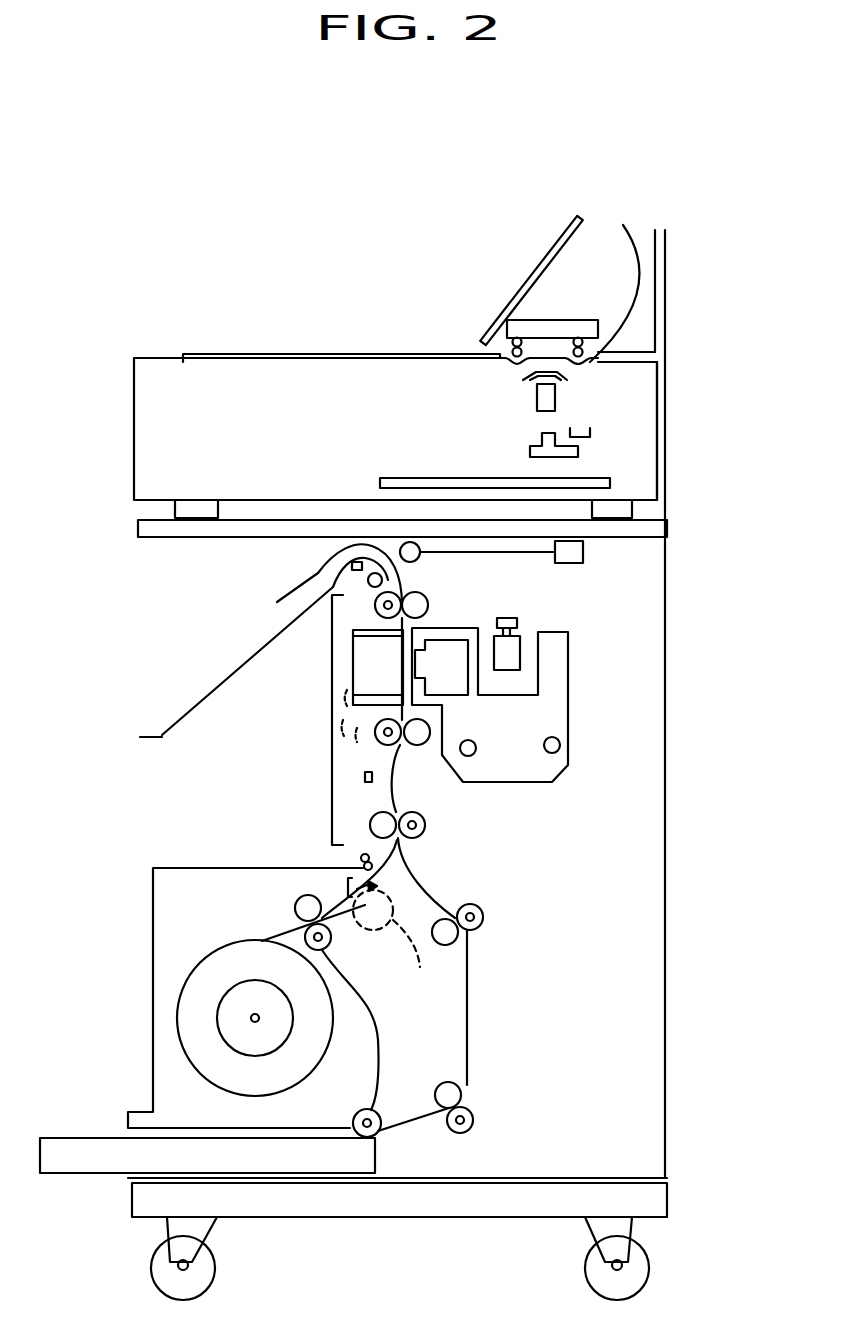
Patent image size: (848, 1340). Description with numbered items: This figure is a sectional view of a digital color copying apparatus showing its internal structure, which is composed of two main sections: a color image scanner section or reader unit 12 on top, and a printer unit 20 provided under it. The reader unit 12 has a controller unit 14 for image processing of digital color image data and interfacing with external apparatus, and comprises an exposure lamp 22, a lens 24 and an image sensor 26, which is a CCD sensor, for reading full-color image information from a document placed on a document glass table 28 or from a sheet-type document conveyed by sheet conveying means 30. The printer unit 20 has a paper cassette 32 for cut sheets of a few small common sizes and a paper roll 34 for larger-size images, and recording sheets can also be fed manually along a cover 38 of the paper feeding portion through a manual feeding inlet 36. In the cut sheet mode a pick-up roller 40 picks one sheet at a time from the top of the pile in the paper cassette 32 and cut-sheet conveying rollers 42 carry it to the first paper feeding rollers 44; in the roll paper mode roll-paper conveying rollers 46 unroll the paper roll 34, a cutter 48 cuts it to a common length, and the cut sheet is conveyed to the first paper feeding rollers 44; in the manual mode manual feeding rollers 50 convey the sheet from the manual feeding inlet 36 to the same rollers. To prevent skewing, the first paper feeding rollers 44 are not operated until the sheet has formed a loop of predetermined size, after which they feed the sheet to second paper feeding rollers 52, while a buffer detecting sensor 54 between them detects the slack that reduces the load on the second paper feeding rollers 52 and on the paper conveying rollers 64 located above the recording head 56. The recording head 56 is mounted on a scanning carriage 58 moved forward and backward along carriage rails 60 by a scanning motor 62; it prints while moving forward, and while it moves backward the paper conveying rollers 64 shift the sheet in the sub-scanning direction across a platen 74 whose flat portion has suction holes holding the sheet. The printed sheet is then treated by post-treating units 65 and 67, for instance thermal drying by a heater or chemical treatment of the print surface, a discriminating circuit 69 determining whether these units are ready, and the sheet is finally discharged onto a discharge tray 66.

The reader unit 12 is at (667, 370).
The controller unit 14 is at (613, 480).
The printer unit 20 is at (667, 903).
The exposure lamp 22 is at (527, 382).
The lens 24 is at (557, 400).
The image sensor 26 is at (530, 434).
The document glass table 28 is at (345, 355).
The sheet conveying means 30 is at (593, 330).
The paper cassette 32 is at (72, 1172).
The paper roll 34 is at (190, 1022).
The manual feeding inlet 36 is at (298, 816).
The cover 38 is at (168, 868).
The pick-up roller 40 is at (395, 1132).
The cut-sheet conveying rollers 42 is at (473, 1105).
The first paper feeding rollers 44 is at (417, 832).
The roll-paper conveying rollers 46 is at (346, 1002).
The cutter 48 is at (394, 941).
The manual feeding rollers 50 is at (361, 860).
The second paper feeding rollers 52 is at (390, 747).
The buffer detecting sensor 54 is at (365, 776).
The recording head 56 is at (460, 697).
The scanning carriage 58 is at (560, 777).
The carriage rails 60 is at (560, 745).
The scanning motor 62 is at (510, 648).
The paper conveying rollers 64 is at (428, 605).
The post-treating unit 65 is at (423, 557).
The discharge tray 66 is at (158, 735).
The post-treating unit 67 is at (370, 586).
The discriminating circuit 69 is at (583, 552).
The platen 74 is at (403, 662).